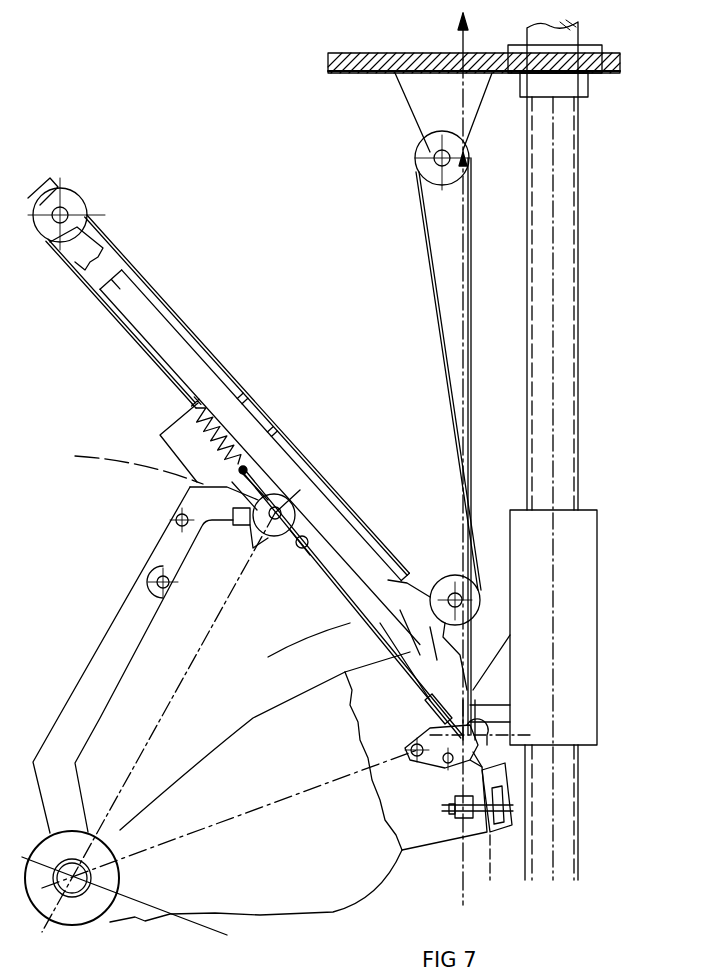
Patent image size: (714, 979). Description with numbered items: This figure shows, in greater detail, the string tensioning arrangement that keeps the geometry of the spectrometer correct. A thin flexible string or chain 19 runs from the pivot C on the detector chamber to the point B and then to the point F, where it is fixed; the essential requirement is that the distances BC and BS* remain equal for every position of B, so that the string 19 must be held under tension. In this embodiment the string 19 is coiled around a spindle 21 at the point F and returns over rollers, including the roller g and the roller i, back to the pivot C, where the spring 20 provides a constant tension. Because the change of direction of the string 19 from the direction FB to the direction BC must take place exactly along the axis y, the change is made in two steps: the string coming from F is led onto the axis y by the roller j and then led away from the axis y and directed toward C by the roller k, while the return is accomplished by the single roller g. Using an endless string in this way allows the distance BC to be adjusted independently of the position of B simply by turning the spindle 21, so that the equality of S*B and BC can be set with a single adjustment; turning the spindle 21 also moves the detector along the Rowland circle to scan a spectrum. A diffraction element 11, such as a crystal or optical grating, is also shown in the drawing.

The spindle 21 is at (425, 168).
The fixing point of the string F is at (466, 163).
The string 19 is at (431, 256).
The spring 20 is at (200, 425).
The pivot C is at (300, 500).
The roller i is at (73, 203).
The roller g is at (448, 588).
The roller j is at (472, 690).
The roller k is at (438, 707).
The point of direction change B is at (482, 721).
The diffraction element 11 is at (492, 826).